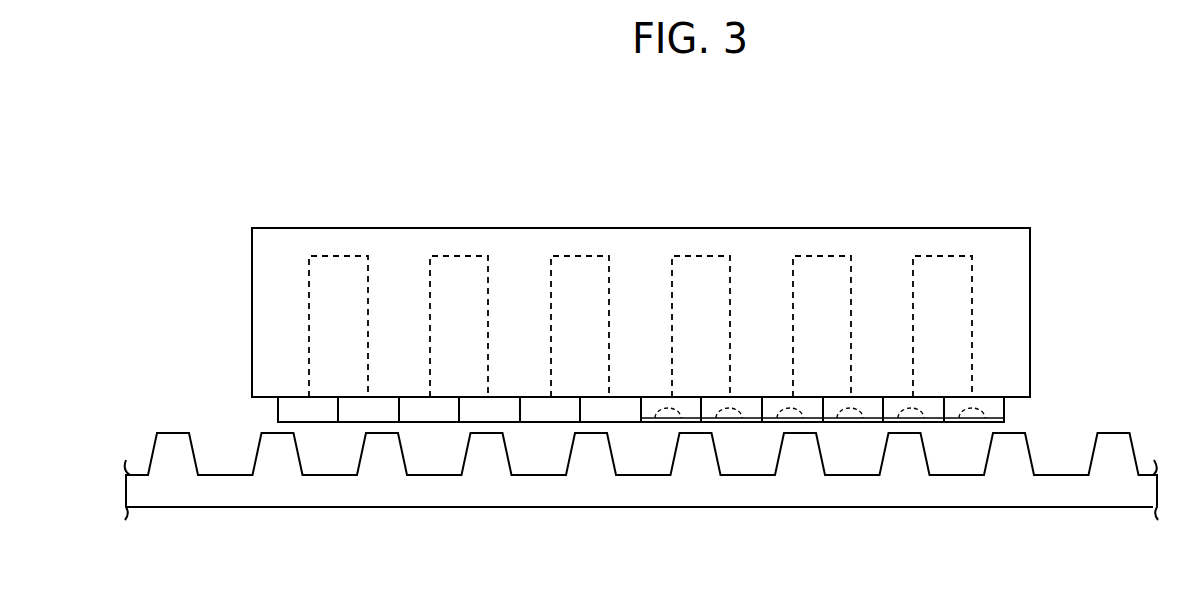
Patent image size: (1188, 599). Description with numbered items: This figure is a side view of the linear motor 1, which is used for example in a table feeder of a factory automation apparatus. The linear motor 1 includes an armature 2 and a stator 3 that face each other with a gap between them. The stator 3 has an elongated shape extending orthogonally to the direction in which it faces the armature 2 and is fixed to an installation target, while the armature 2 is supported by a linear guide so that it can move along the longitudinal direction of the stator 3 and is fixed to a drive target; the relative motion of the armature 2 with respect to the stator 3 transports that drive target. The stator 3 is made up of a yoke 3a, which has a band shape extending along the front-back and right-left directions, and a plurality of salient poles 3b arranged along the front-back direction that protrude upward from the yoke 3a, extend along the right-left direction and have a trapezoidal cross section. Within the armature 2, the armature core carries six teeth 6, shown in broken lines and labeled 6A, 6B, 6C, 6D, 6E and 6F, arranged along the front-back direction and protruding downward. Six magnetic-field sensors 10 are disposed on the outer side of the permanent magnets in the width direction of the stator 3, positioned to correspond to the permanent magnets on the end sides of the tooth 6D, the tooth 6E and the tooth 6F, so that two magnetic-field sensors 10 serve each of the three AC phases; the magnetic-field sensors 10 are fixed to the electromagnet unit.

The linear motor 1 is at (1075, 158).
The armature 2 is at (1044, 225).
The stator 3 is at (1126, 415).
The yoke 3a is at (223, 487).
The salient poles 3b is at (388, 443).
The teeth 6 is at (638, 288).
The tooth 6A is at (331, 255).
The tooth 6B is at (452, 255).
The tooth 6C is at (573, 255).
The tooth 6D is at (694, 255).
The tooth 6E is at (803, 255).
The tooth 6F is at (927, 255).
The magnetic-field sensors 10 is at (716, 412).